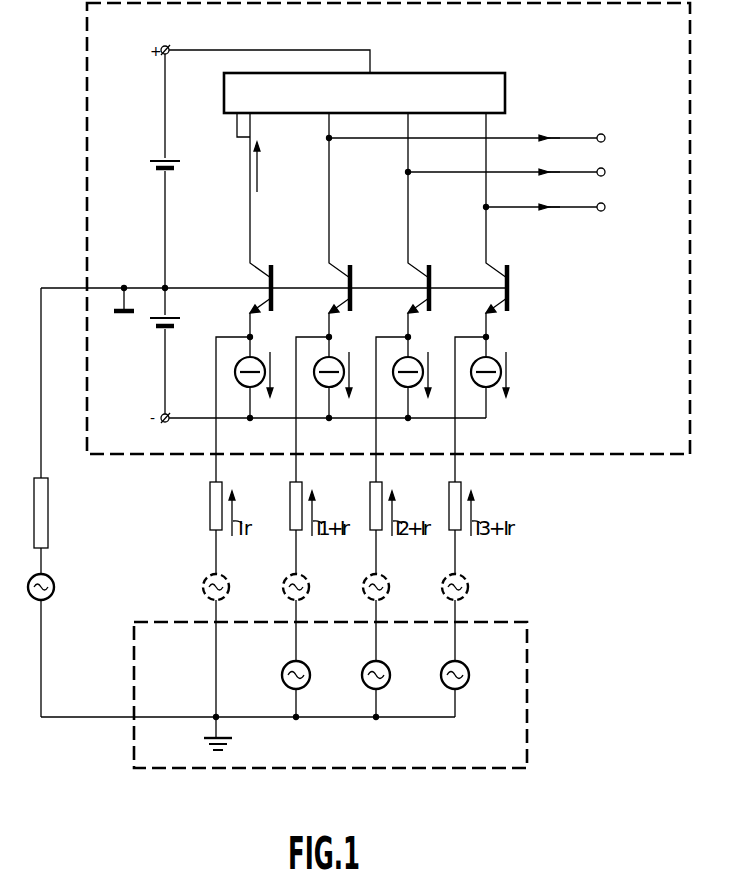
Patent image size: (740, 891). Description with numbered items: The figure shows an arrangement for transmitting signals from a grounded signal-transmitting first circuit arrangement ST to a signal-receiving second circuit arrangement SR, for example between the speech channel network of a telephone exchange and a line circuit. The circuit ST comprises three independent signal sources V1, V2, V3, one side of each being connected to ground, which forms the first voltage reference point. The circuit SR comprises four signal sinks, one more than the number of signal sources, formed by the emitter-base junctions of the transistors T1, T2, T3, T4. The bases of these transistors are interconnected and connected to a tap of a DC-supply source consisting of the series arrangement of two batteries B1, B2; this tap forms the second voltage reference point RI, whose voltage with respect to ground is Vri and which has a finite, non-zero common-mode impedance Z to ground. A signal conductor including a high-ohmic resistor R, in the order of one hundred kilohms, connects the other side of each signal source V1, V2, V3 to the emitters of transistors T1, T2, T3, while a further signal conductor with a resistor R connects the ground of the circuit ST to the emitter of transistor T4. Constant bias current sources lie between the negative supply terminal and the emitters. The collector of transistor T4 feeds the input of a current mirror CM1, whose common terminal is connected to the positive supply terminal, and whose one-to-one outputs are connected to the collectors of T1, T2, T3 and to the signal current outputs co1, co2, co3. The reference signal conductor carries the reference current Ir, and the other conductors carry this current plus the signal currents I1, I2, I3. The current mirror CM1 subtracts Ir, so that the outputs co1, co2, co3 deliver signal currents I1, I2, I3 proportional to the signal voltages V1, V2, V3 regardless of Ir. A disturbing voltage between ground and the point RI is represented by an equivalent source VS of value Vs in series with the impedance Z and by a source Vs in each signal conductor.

The signal-receiving second circuit arrangement SR is at (608, 458).
The grounded signal-transmitting first circuit arrangement ST is at (527, 672).
The current mirror CM1 is at (428, 73).
The battery B1 is at (180, 162).
The battery B2 is at (180, 316).
The second voltage reference point RI is at (124, 287).
The voltage at the second voltage reference point Vri is at (166, 287).
The transistor T1 is at (511, 288).
The transistor T2 is at (431, 288).
The transistor T3 is at (353, 288).
The transistor T4 is at (273, 288).
The signal current I1 is at (556, 138).
The signal current I2 is at (556, 172).
The signal current I3 is at (556, 207).
The signal current output co1 is at (605, 140).
The signal current output co2 is at (605, 174).
The signal current output co3 is at (605, 209).
The reference current Ir is at (265, 167).
The resistor R is at (210, 492).
The disturbing voltage Vs is at (238, 562).
The impedance Z is at (48, 492).
The disturbing voltage source VS is at (62, 561).
The signal source V1 is at (320, 650).
The signal source V2 is at (400, 650).
The signal source V3 is at (479, 650).